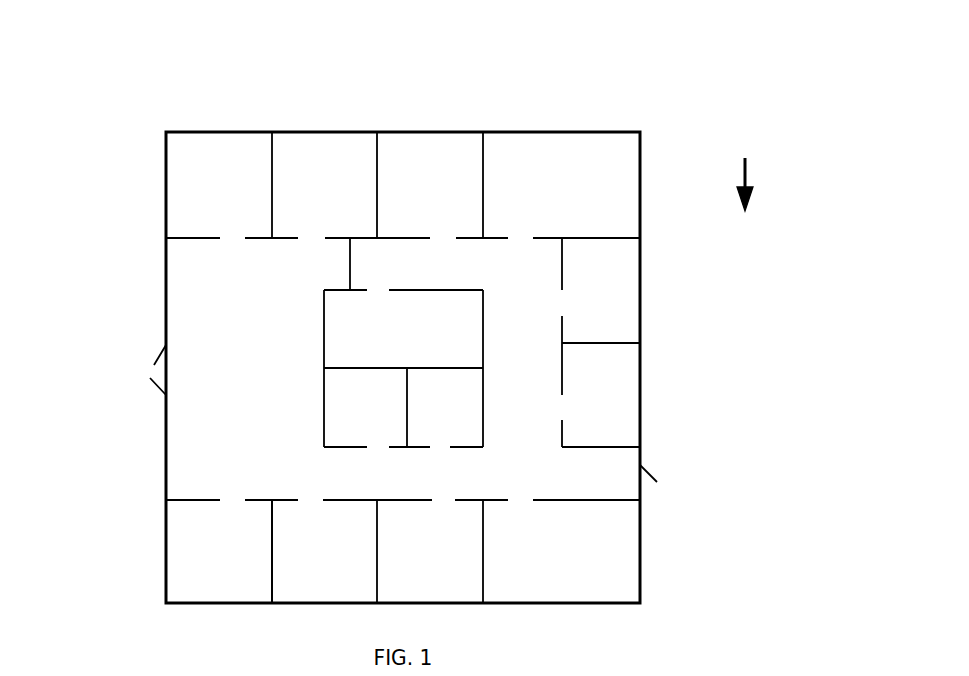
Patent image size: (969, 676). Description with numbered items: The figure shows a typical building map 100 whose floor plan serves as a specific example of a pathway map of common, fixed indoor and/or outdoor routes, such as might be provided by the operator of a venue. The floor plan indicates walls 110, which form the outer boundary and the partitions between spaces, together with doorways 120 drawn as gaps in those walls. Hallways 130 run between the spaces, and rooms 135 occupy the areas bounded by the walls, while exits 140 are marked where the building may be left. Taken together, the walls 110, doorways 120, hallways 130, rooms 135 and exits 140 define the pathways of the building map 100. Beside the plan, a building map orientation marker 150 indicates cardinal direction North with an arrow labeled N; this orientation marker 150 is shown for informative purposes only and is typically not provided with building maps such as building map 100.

The building map 100 is at (411, 335).
The walls 110 is at (268, 527).
The doorways 120 is at (442, 237).
The hallways 130 is at (364, 369).
The rooms 135 is at (219, 185).
The exits 140 is at (152, 363).
The building map orientation marker 150 is at (745, 132).